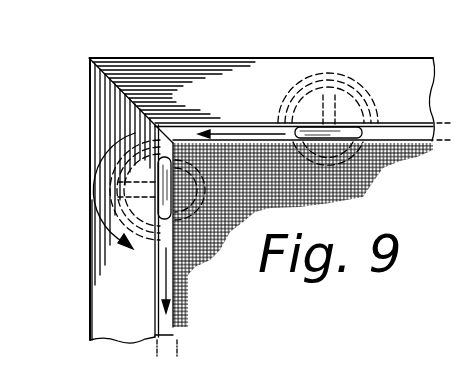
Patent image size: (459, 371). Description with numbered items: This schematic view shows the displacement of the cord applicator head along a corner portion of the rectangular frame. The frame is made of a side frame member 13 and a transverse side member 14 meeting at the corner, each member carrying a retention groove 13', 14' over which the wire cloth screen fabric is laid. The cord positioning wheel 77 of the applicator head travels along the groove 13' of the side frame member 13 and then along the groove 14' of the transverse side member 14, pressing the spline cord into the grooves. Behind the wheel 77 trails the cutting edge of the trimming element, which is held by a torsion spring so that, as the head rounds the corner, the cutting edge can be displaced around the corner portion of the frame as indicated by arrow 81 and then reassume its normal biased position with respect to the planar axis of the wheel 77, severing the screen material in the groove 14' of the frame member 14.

The side frame member 13 is at (262, 184).
The retention groove 13' is at (304, 162).
The transverse side member 14 is at (60, 270).
The retention groove 14' is at (199, 240).
The cord positioning wheel 77 is at (343, 135).
The arrow 81 is at (102, 208).